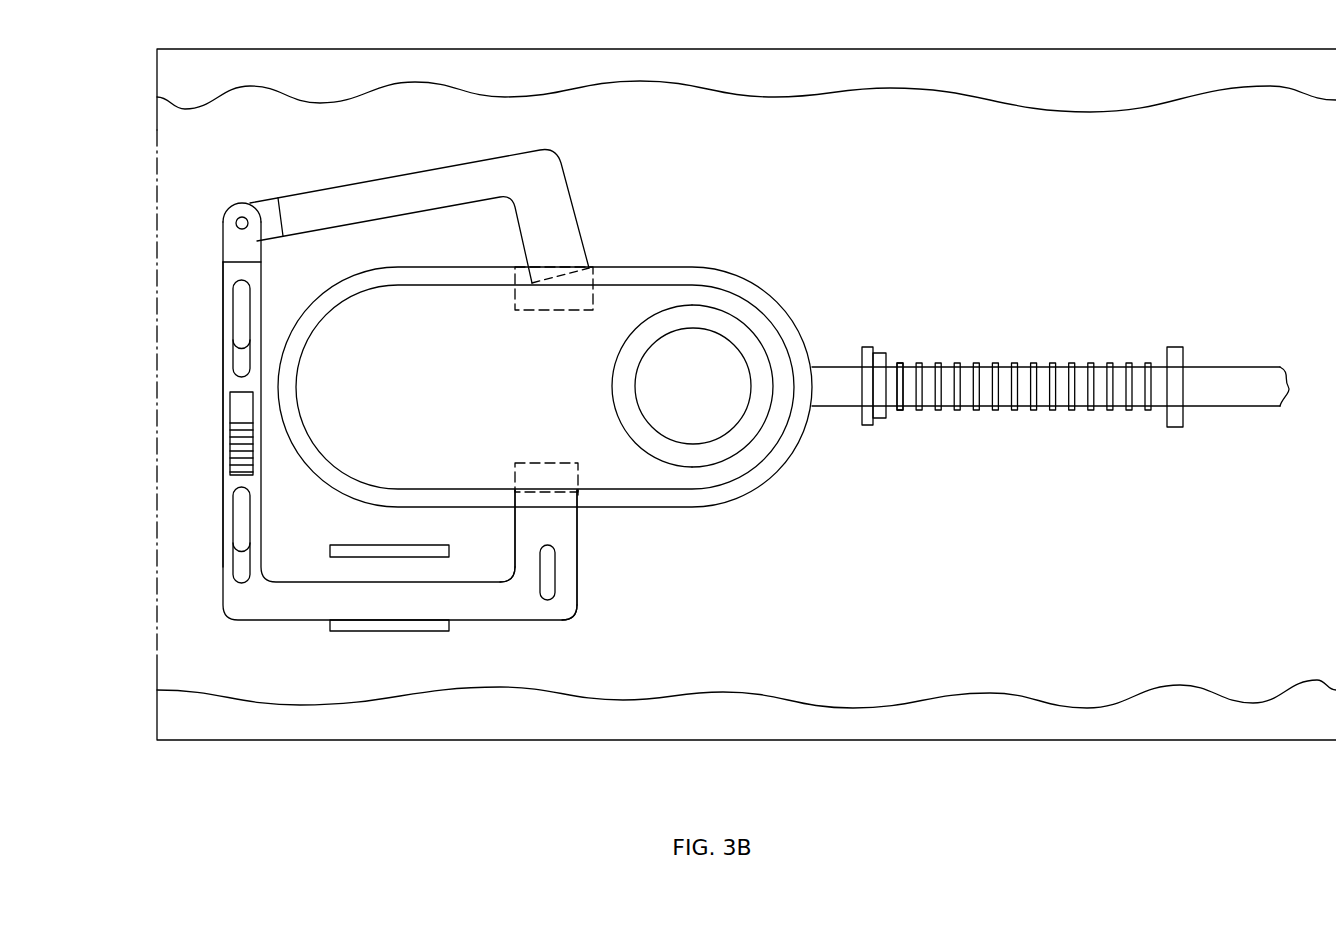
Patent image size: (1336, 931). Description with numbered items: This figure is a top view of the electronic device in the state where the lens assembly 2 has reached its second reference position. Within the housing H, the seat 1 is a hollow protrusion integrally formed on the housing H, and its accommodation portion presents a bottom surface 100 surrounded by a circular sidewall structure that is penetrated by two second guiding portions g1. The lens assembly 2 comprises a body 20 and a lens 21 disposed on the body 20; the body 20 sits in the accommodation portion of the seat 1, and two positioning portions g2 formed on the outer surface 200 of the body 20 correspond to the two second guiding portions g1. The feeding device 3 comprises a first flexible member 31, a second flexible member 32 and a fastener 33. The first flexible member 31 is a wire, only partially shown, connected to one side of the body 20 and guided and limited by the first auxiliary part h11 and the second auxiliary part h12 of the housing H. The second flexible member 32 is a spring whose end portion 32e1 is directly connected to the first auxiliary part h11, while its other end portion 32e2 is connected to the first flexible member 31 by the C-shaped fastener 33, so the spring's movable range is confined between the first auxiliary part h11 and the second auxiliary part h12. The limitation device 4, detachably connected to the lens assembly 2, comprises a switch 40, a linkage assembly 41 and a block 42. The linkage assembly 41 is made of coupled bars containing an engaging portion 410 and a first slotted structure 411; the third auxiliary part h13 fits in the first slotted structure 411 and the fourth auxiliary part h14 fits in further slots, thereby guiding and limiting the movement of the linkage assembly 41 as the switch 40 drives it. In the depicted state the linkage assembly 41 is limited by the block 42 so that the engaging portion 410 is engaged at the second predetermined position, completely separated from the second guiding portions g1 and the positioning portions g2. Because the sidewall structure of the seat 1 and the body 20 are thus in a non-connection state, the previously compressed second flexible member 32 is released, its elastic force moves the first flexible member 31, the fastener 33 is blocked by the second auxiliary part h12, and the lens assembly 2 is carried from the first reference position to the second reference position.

The housing H is at (146, 71).
The seat 1 is at (335, 268).
The bottom surface 100 is at (763, 489).
The outer surface 200 is at (765, 313).
The lens assembly 2 is at (675, 188).
The body 20 is at (590, 384).
The lens 21 is at (693, 380).
The second guiding portions g1 is at (587, 280).
The positioning portions g2 is at (535, 300).
The limitation device 4 is at (95, 487).
The switch 40 is at (232, 437).
The linkage assembly 41 is at (222, 533).
The block 42 is at (335, 555).
The engaging portion 410 is at (570, 530).
The first slotted structure 411 is at (546, 598).
The third auxiliary part h13 is at (555, 556).
The fourth auxiliary part h14 is at (242, 517).
The feeding device 3 is at (990, 516).
The first flexible member 31 is at (988, 402).
The second flexible member 32 is at (934, 412).
The end portion 32e1 is at (1168, 412).
The end portion 32e2 is at (903, 363).
The fastener 33 is at (876, 425).
The first auxiliary part h11 is at (1176, 347).
The second auxiliary part h12 is at (869, 347).